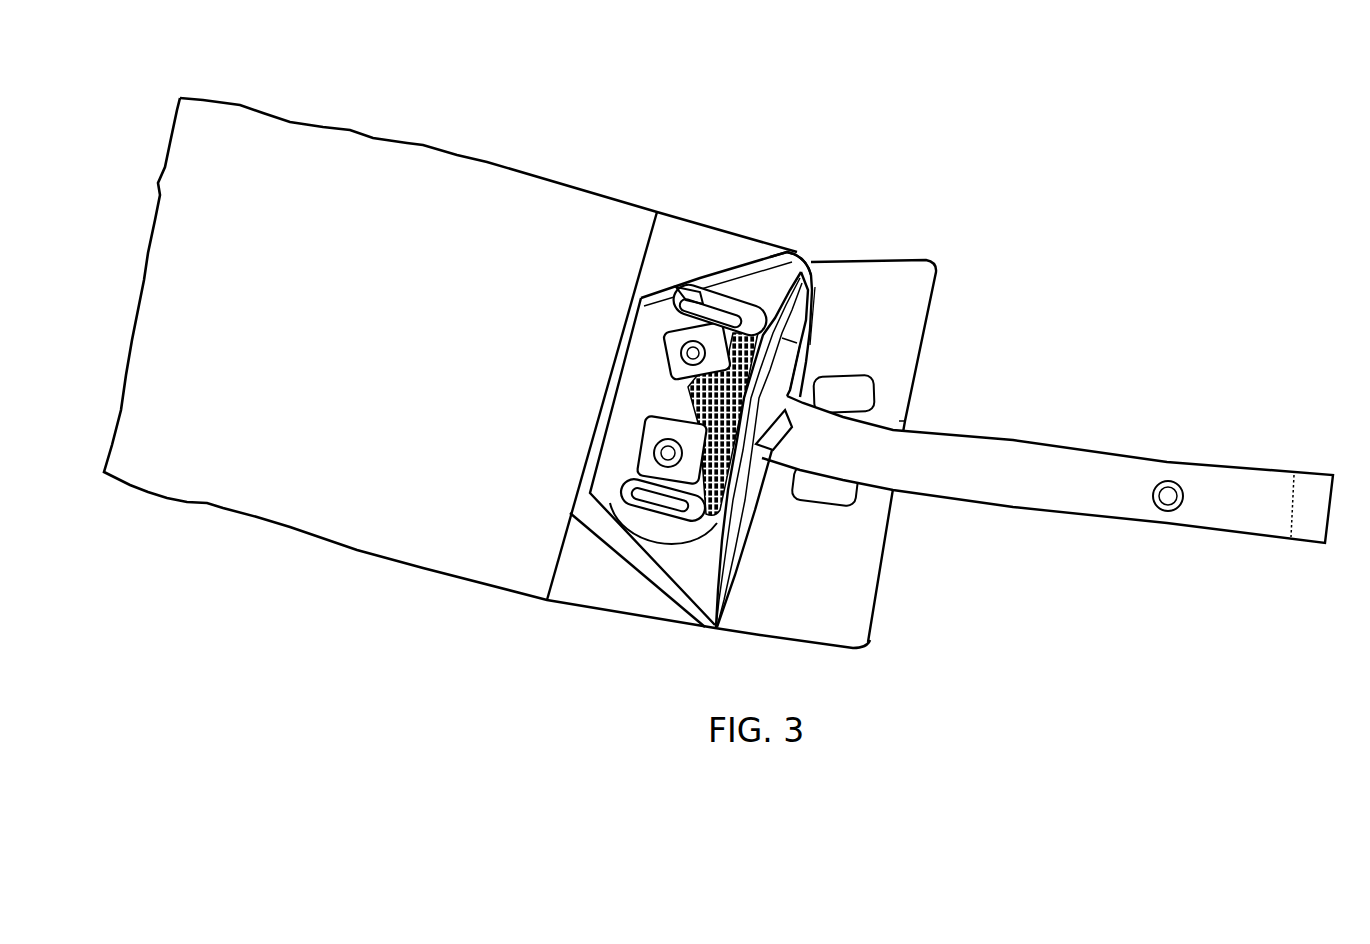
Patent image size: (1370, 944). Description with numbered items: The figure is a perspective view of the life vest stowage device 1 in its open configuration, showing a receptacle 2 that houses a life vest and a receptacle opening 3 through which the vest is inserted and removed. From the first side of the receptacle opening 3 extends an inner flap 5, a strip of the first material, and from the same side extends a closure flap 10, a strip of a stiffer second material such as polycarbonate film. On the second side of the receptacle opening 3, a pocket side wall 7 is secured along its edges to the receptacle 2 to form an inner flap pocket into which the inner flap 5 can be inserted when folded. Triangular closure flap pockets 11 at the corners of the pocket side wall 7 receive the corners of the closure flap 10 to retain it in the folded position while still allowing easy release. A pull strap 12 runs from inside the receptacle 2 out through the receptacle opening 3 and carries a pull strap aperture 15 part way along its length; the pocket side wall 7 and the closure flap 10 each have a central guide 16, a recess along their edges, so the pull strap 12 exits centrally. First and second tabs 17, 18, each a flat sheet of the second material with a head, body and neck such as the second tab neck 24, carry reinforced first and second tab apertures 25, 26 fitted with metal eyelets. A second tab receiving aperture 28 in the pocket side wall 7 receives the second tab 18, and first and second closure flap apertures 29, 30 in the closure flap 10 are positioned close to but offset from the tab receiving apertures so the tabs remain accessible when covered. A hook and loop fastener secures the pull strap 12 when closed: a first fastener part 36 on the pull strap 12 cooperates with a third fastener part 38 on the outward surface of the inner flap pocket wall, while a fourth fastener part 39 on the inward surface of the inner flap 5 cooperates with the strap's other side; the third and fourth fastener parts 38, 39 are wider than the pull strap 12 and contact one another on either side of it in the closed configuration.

The life vest stowage device 1 is at (553, 128).
The receptacle 2 is at (323, 503).
The receptacle opening 3 is at (808, 307).
The inner flap 5 is at (800, 330).
The pocket side wall 7 is at (790, 263).
The closure flap 10 is at (913, 305).
The closure flap pocket 11 is at (682, 240).
The pull strap 12 is at (1017, 460).
The pull strap aperture 15 is at (1166, 511).
The guide 16 is at (901, 421).
The first tab 17 is at (648, 437).
The second tab 18 is at (666, 365).
The second tab neck 24 is at (632, 507).
The first tab aperture 25 is at (659, 454).
The second tab aperture 26 is at (680, 346).
The second tab receiving aperture 28 is at (705, 305).
The first closure flap aperture 29 is at (843, 491).
The second closure flap aperture 30 is at (864, 393).
The first fastener part 36 is at (778, 426).
The third fastener part 38 is at (765, 325).
The fourth fastener part 39 is at (805, 350).